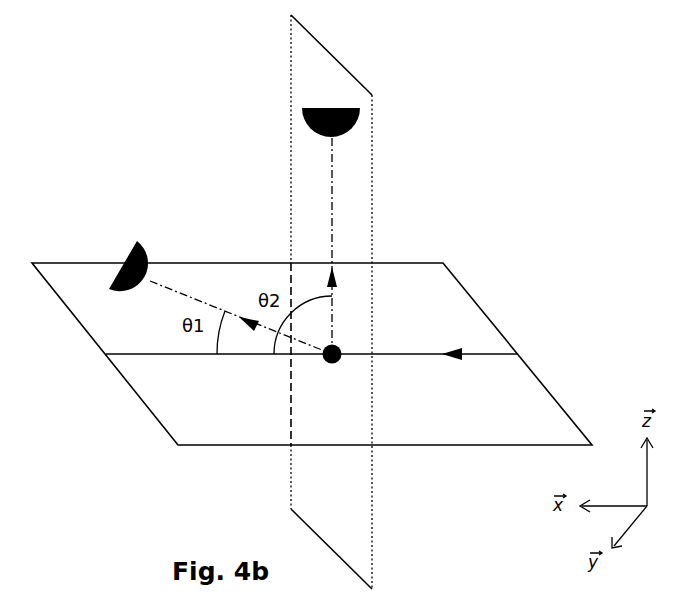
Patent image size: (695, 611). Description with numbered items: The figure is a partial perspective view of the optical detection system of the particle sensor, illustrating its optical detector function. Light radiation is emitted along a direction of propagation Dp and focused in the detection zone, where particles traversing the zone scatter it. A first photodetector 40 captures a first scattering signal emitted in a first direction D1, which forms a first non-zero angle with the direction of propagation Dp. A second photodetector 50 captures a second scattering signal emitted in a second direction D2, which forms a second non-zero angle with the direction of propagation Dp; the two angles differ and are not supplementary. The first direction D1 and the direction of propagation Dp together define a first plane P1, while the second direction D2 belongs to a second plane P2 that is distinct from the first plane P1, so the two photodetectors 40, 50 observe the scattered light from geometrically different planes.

The first photodetector 40 is at (131, 252).
The second photodetector 50 is at (346, 108).
The first plane P1 is at (456, 278).
The second plane P2 is at (372, 513).
The first direction D1 is at (184, 293).
The second direction D2 is at (333, 228).
The direction of propagation Dp is at (203, 356).